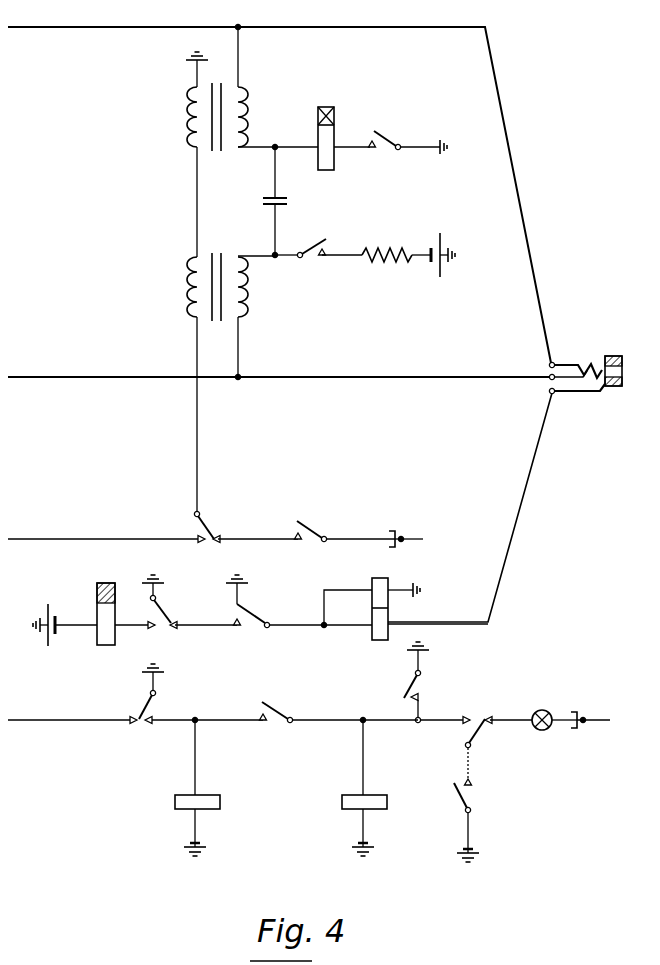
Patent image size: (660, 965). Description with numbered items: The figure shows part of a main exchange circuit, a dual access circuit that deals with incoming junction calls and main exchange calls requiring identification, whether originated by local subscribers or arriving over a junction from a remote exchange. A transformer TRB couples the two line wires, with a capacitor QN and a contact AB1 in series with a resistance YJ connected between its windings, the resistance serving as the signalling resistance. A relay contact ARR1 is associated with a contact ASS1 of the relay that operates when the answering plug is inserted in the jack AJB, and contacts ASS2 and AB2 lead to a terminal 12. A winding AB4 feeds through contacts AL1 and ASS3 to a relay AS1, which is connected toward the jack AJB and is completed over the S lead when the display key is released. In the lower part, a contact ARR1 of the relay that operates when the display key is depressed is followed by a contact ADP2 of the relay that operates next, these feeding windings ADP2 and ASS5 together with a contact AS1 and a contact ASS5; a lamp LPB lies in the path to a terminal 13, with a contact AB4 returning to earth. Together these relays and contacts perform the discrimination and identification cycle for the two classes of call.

The transformer TRB is at (230, 270).
The capacitor QN is at (287, 200).
The relay ARR1 and its contact ARR1 is at (344, 86).
The contact of relay ASS ASS1 is at (408, 141).
The contact of relay AB AB1 is at (318, 246).
The resistor YJ is at (408, 252).
The jack AJB is at (578, 372).
The contact of relay ASS ASS2 is at (246, 527).
The contact of relay AB AB2 is at (345, 526).
The terminal 12 is at (404, 537).
The relay AB4 and its contact AB4 is at (92, 591).
The contact of relay AL AL1 is at (189, 602).
The contact of relay ASS ASS3 is at (299, 601).
The relay AS1 and its contact AS1 is at (369, 570).
The relay ADP2 and its contact ADP2 is at (130, 796).
The relay ASS5 and its contact ASS5 is at (302, 796).
The lamp LPB is at (551, 709).
The terminal 13 is at (587, 714).